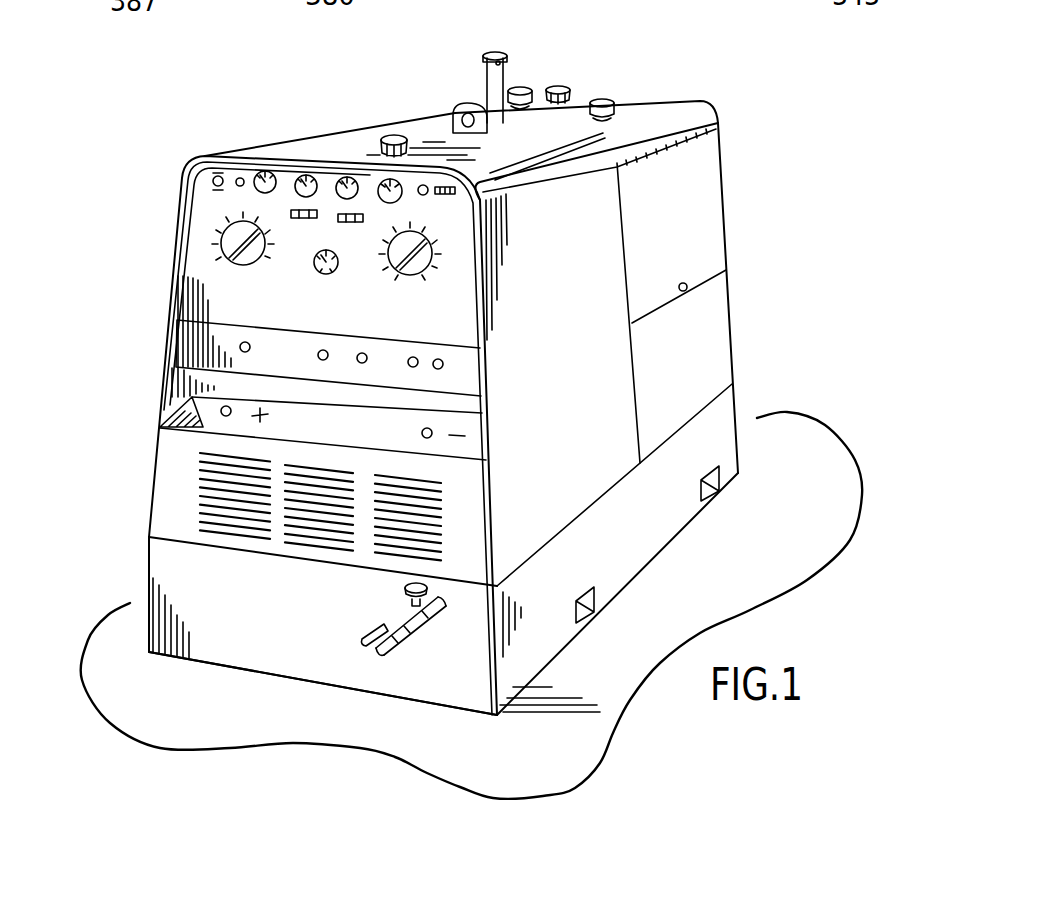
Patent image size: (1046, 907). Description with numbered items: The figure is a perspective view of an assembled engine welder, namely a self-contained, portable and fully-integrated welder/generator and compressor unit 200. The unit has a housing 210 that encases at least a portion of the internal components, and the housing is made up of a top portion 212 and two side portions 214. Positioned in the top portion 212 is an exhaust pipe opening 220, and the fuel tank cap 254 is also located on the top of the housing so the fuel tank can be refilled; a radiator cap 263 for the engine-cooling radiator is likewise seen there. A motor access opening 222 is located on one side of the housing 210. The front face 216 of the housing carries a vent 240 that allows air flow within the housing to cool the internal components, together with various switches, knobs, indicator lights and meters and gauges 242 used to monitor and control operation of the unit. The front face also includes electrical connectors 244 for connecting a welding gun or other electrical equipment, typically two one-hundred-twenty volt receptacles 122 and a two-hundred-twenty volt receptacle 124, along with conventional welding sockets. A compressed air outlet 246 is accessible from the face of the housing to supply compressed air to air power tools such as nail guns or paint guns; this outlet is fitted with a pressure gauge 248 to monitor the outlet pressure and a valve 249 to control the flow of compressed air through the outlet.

The welder/generator and compressor unit 200 is at (242, 138).
The housing 210 is at (173, 562).
The top portion 212 is at (643, 103).
The side portions 214 is at (717, 317).
The front face 216 is at (474, 496).
The exhaust pipe opening 220 is at (497, 78).
The motor access opening 222 is at (705, 164).
The vent 240 is at (428, 542).
The switches, knobs, indicator lights and meters and gauges 242 is at (207, 226).
The electrical connectors 244 is at (328, 357).
The compressed air outlet 246 is at (402, 636).
The pressure gauge 248 is at (404, 588).
The valve 249 is at (360, 634).
The cap 254 is at (393, 136).
The radiator cap 263 is at (565, 85).
The 120 volt receptacles 122 is at (340, 221).
The 220 volt receptacle 124 is at (221, 409).